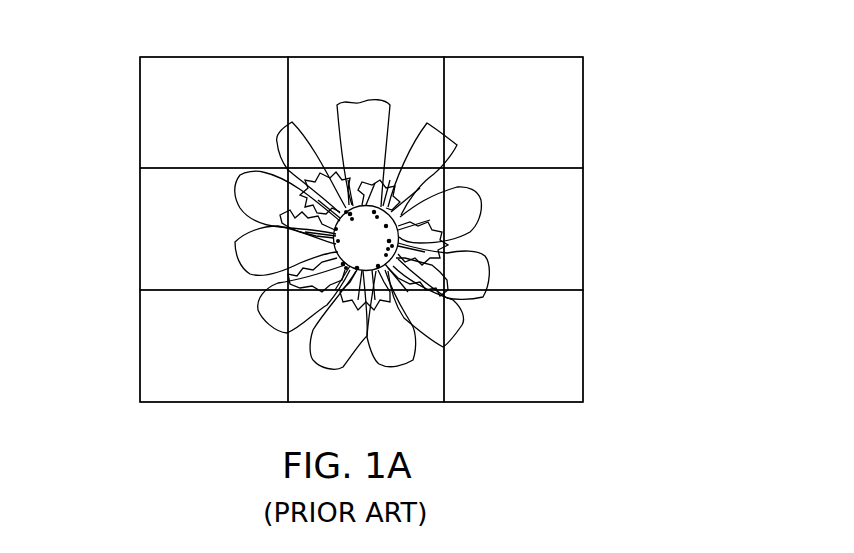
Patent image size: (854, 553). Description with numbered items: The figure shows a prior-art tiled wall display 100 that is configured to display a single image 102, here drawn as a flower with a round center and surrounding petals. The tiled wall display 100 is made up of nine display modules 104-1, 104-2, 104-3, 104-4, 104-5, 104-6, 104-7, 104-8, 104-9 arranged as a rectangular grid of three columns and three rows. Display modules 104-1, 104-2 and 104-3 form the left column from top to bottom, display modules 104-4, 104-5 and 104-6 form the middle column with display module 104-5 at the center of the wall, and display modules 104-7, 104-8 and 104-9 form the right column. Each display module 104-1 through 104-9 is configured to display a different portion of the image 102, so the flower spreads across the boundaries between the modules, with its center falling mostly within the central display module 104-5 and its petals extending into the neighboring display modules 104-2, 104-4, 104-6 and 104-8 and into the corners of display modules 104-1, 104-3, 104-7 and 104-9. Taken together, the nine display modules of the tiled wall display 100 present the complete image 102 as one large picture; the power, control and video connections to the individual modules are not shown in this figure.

The tiled wall display 100 is at (645, 86).
The image 102 is at (237, 248).
The display module 104-1 is at (220, 91).
The display module 104-2 is at (220, 212).
The display module 104-3 is at (220, 334).
The display module 104-4 is at (393, 84).
The display module 104-5 is at (388, 180).
The display module 104-6 is at (360, 396).
The display module 104-7 is at (558, 92).
The display module 104-8 is at (558, 212).
The display module 104-9 is at (558, 334).